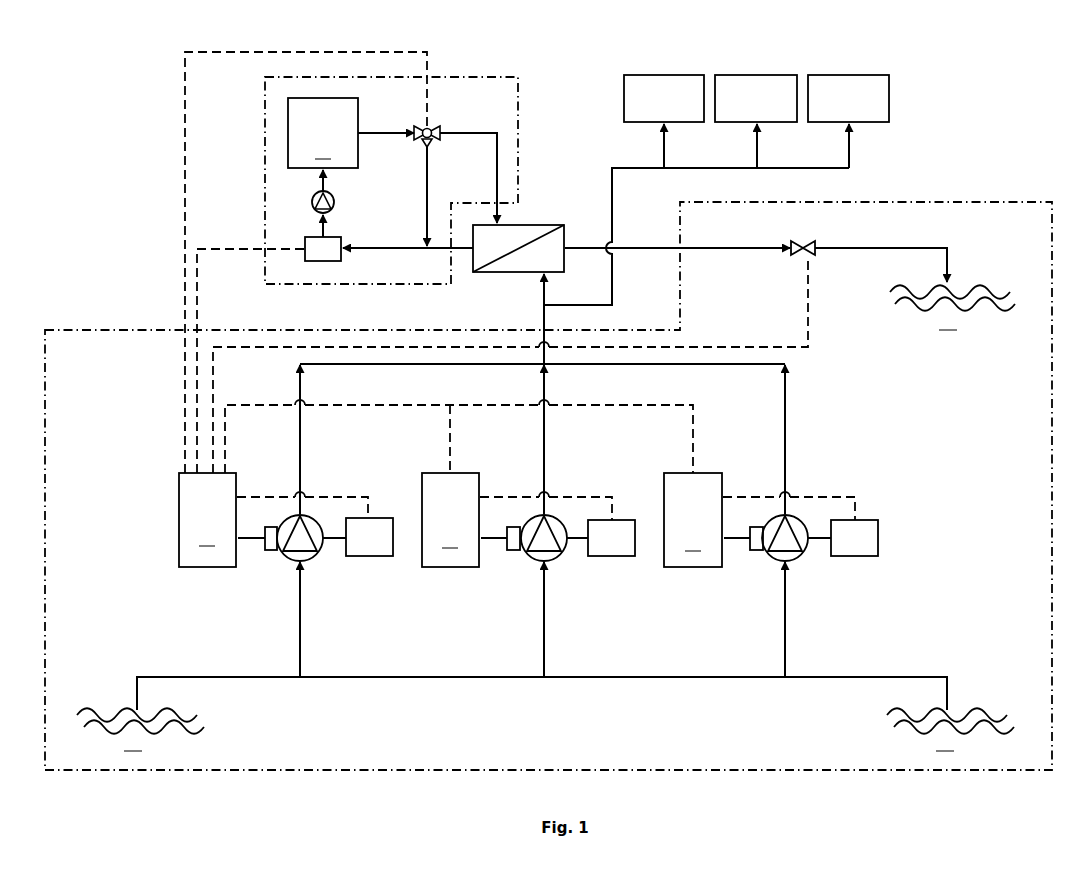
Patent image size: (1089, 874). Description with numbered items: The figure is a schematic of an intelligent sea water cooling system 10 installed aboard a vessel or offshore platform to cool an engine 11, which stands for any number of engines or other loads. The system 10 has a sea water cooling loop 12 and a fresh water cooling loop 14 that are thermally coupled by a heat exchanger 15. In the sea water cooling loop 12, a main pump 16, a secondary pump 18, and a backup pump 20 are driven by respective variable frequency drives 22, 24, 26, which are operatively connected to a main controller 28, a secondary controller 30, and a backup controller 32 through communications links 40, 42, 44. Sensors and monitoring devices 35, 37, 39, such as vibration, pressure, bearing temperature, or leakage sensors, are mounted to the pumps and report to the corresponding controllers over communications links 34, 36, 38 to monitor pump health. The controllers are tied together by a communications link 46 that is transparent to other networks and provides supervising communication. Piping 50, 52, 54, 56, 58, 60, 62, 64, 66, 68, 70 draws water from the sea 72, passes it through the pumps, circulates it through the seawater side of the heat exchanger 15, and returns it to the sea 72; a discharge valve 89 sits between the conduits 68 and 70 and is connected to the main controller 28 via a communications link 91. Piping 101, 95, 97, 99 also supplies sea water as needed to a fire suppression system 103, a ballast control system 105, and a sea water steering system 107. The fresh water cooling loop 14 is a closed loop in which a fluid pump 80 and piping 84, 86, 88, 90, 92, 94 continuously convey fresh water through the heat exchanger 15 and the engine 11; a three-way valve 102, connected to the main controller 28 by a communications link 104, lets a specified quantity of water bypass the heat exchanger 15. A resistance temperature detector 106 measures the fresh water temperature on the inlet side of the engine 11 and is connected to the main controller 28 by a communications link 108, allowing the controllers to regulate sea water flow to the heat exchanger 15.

The intelligent sea water cooling system 10 is at (66, 200).
The engine 11 is at (323, 133).
The sea water cooling loop 12 is at (1013, 201).
The fresh water cooling loop 14 is at (522, 108).
The heat exchanger 15 is at (542, 223).
The main pump 16 is at (316, 558).
The secondary pump 18 is at (558, 559).
The backup pump 20 is at (800, 559).
The variable frequency drive 22 is at (371, 559).
The variable frequency drive 24 is at (614, 558).
The variable frequency drive 26 is at (858, 558).
The main controller 28 is at (207, 520).
The secondary controller 30 is at (450, 520).
The backup controller 32 is at (693, 520).
The communications link 34 is at (253, 543).
The sensors and monitoring devices 35 is at (272, 553).
The communications link 36 is at (495, 542).
The sensors and monitoring devices 37 is at (516, 552).
The communications link 38 is at (735, 542).
The sensors and monitoring devices 39 is at (757, 552).
The communications link 40 is at (358, 496).
The communications link 42 is at (603, 496).
The communications link 44 is at (847, 496).
The communications link 46 is at (369, 408).
The piping 50 is at (479, 681).
The piping 52 is at (303, 632).
The piping 54 is at (546, 632).
The piping 56 is at (788, 632).
The piping 58 is at (303, 442).
The piping 60 is at (547, 438).
The piping 62 is at (789, 437).
The piping 64 is at (717, 367).
The piping 66 is at (540, 292).
The conduit 68 is at (737, 252).
The conduit 70 is at (884, 252).
The sea 72 is at (546, 518).
The fluid pump 80 is at (337, 203).
The piping 84 is at (397, 251).
The piping 86 is at (320, 227).
The piping 88 is at (320, 185).
The discharge valve 89 is at (796, 255).
The piping 90 is at (383, 130).
The communications link 91 is at (812, 329).
The piping 92 is at (495, 192).
The piping 94 is at (429, 174).
The piping 95 is at (662, 143).
The piping 97 is at (754, 143).
The piping 99 is at (846, 143).
The piping 101 is at (614, 207).
The 3-way valve 102 is at (431, 128).
The fire suppression system 103 is at (664, 72).
The communications link 104 is at (184, 157).
The ballast control system 105 is at (764, 72).
The resistance temperature detector 106 is at (343, 238).
The sea water steering system 107 is at (851, 72).
The communications link 108 is at (220, 253).